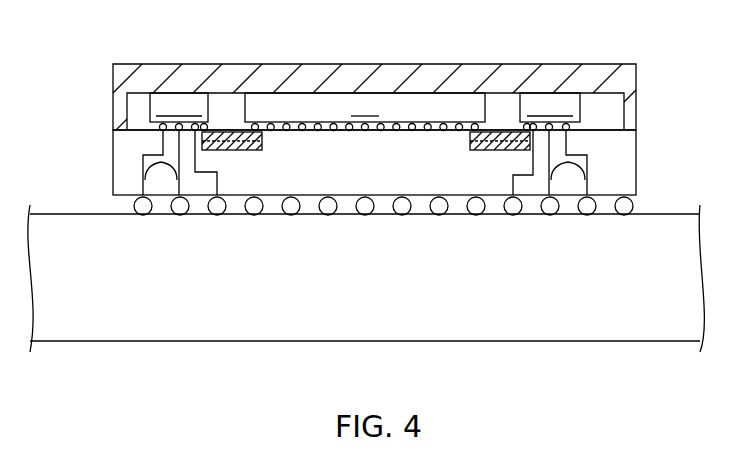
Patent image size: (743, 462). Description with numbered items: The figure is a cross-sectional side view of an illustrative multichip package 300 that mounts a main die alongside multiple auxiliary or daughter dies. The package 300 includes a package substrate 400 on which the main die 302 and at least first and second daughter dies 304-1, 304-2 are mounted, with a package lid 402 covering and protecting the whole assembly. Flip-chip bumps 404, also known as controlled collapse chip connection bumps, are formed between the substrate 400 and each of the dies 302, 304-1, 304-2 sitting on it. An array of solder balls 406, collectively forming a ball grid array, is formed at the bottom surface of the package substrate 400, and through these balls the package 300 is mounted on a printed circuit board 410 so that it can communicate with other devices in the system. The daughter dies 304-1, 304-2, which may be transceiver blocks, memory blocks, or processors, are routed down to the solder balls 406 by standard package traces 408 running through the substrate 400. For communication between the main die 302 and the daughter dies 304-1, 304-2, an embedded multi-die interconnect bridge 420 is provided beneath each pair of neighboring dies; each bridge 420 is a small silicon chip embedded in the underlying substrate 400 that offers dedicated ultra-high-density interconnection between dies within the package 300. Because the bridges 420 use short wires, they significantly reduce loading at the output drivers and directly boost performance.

The multichip package 300 is at (385, 142).
The main die 302 is at (365, 107).
The first daughter die 304-1 is at (179, 107).
The second daughter die 304-2 is at (550, 107).
The package substrate 400 is at (348, 163).
The package lid 402 is at (154, 72).
The flip-chip bumps 404 is at (160, 128).
The solder balls 406 is at (143, 215).
The package traces 408 is at (365, 162).
The printed circuit board 410 is at (214, 343).
The embedded multi-die interconnect bridge 420 is at (202, 152).